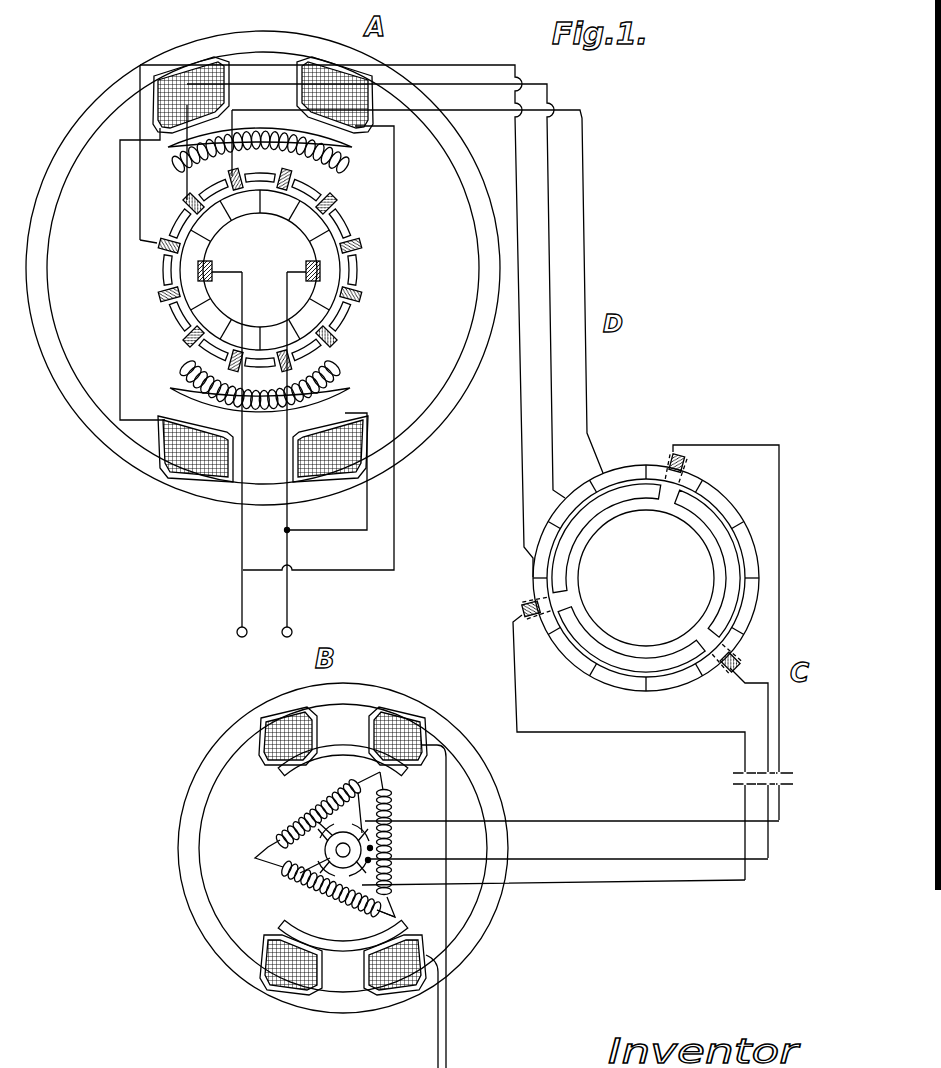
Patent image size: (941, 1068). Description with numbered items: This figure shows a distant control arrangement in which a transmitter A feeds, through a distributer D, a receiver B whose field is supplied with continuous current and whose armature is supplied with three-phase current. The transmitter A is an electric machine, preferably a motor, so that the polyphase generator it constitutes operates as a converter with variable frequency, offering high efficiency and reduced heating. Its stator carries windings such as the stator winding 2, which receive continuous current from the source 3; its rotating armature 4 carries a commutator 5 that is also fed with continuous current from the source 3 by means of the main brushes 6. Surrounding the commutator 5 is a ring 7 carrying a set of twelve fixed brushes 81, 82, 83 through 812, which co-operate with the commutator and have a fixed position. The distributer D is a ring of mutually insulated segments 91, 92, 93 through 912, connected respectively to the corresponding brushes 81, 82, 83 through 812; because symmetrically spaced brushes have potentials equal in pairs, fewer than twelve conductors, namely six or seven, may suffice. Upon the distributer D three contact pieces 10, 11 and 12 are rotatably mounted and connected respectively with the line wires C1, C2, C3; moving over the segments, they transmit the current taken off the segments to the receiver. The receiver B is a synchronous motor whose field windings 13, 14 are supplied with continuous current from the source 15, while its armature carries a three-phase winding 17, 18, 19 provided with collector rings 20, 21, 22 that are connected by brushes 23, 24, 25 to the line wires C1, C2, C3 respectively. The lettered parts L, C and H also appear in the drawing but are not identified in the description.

The transmitter A is at (365, 35).
The receiver B is at (315, 667).
The distributor C is at (637, 624).
The distributer D is at (371, 321).
The field winding / pole L is at (170, 84).
The stator winding 2 is at (365, 443).
The source of continuous current 3 is at (239, 637).
The rotating armature 4 is at (350, 177).
The commutator 5 is at (330, 280).
The brushes 6 is at (212, 263).
The ring 7 is at (313, 237).
The brush 81 is at (163, 248).
The brush 82 is at (188, 202).
The brush 83 is at (231, 182).
The brush 812 is at (163, 297).
The segment 91 is at (550, 557).
The segment 92 is at (570, 513).
The segment 93 is at (620, 485).
The segment 912 is at (527, 603).
The contact piece 10 is at (668, 452).
The contact piece 11 is at (735, 665).
The contact piece 12 is at (520, 610).
The hub H is at (627, 650).
The line wire C1 is at (779, 742).
The line wire C2 is at (768, 760).
The line wire C3 is at (745, 762).
The field winding 13 is at (402, 978).
The field winding 14 is at (270, 738).
The source of continuous current 15 is at (454, 906).
The three-phase armature winding 17 is at (389, 815).
The three-phase armature winding 18 is at (328, 890).
The three-phase armature winding 19 is at (298, 818).
The collector ring 20 is at (341, 822).
The collector ring 21 is at (347, 828).
The collector ring 22 is at (347, 860).
The brush 23 is at (370, 862).
The brush 24 is at (350, 863).
The brush 25 is at (335, 848).